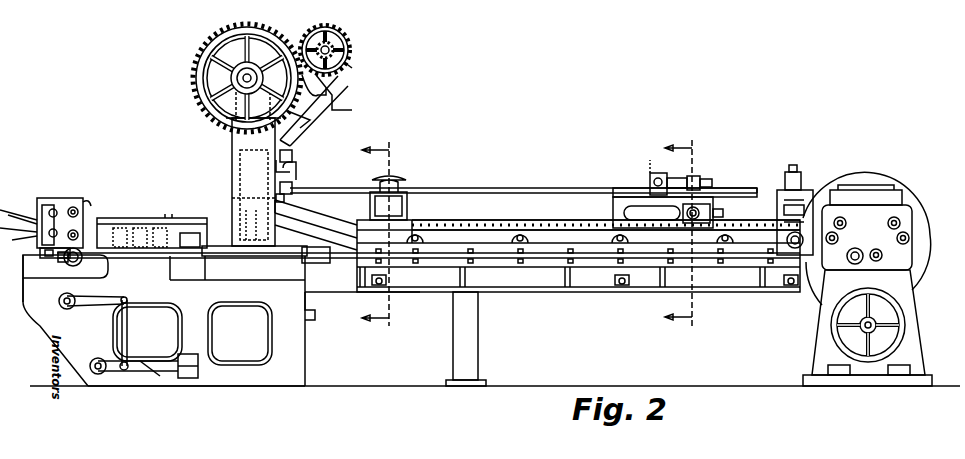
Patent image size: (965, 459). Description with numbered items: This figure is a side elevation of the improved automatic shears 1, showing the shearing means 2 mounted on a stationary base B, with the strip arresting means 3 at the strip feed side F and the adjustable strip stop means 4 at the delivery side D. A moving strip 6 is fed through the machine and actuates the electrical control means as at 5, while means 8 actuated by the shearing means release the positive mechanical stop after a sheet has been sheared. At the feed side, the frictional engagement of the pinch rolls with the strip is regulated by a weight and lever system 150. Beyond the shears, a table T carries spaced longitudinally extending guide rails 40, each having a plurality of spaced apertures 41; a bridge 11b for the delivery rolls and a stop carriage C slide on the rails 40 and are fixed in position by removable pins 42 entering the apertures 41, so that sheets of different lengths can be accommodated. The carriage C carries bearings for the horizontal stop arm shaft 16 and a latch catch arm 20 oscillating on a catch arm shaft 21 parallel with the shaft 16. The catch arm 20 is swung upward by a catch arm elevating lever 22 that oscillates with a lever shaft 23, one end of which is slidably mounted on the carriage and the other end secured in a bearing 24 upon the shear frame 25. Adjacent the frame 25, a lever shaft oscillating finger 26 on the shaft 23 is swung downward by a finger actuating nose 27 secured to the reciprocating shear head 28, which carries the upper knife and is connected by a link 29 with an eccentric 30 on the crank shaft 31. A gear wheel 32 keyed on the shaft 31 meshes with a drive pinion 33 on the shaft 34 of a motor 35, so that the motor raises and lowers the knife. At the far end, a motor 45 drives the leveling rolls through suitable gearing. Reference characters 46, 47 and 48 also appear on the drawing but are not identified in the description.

The automatic shears 1 is at (360, 390).
The shearing means 2 is at (284, 160).
The strip arresting means 3 is at (128, 212).
The adjustable strip stop means 4 is at (650, 172).
The control means actuation point 5 is at (382, 233).
The moving strip 6 is at (685, 232).
The stop releasing means 8 is at (298, 176).
The bridge 11b is at (372, 196).
The stop arm shaft 16 is at (712, 205).
The latch catch arm 20 is at (700, 175).
The catch arm shaft 21 is at (650, 176).
The catch arm elevating lever 22 is at (652, 213).
The lever shaft 23 is at (560, 188).
The bearing 24 is at (285, 202).
The shear frame 25 is at (235, 180).
The lever shaft oscillating finger 26 is at (293, 186).
The finger actuating nose 27 is at (292, 168).
The reciprocating shear head 28 is at (240, 160).
The link 29 is at (218, 108).
The eccentric 30 is at (258, 58).
The crank shaft 31 is at (252, 88).
The gear wheel 32 is at (212, 52).
The drive pinion 33 is at (358, 69).
The motor shaft 34 is at (337, 48).
The motor 35 is at (340, 28).
The guide rails 40 is at (496, 222).
The apertures 41 is at (440, 225).
The removable pins 42 is at (412, 218).
The motor 45 is at (905, 318).
The coupling 46 is at (83, 262).
The lever 47 is at (60, 292).
The column base 48 is at (230, 262).
The weight and lever system 150 is at (130, 371).
The stationary base B is at (292, 350).
The stop carriage C is at (612, 200).
The delivery side D is at (523, 173).
The strip feed side F is at (45, 207).
The table T is at (535, 290).